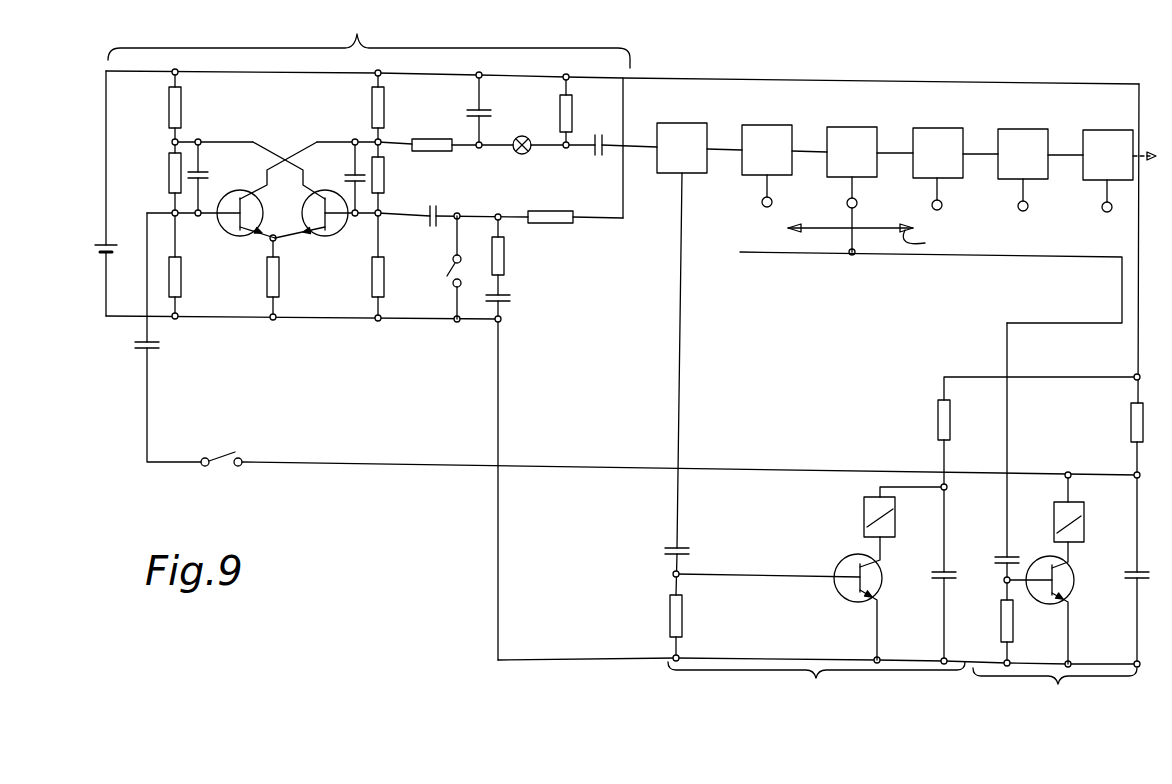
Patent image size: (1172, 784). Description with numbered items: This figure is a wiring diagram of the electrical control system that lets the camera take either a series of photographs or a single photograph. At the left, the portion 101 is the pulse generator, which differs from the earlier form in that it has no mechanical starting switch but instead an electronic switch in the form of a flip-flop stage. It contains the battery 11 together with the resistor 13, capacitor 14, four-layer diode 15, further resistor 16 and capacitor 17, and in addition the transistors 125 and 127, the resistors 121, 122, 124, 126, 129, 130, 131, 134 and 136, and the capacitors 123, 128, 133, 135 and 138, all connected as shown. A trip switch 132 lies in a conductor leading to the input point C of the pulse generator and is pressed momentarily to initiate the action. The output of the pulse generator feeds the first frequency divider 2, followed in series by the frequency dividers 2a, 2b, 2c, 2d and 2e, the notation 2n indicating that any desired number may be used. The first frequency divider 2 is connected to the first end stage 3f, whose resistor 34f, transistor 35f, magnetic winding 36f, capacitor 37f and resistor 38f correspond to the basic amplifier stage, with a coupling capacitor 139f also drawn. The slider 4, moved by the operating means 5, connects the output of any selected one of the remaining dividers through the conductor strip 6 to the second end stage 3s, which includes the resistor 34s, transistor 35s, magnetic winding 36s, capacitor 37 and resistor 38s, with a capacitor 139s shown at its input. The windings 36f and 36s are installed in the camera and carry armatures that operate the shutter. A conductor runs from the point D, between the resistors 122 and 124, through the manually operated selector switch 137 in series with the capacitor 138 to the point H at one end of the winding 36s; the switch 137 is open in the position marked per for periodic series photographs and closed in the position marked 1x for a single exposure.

The pulse generator 101 is at (369, 37).
The battery 11 is at (117, 262).
The resistor 121 is at (181, 111).
The resistor 122 is at (169, 186).
The capacitor 123 is at (210, 178).
The resistor 124 is at (181, 283).
The transistor 125 is at (232, 228).
The resistor 126 is at (267, 290).
The transistor 127 is at (324, 240).
The capacitor 128 is at (343, 180).
The resistor 129 is at (372, 110).
The resistor 130 is at (384, 181).
The resistor 131 is at (366, 284).
The trip switch 132 is at (446, 278).
The capacitor 133 is at (444, 207).
The resistor 134 is at (504, 262).
The capacitor 135 is at (510, 298).
The resistor 136 is at (562, 224).
The selector switch 137 is at (215, 452).
The capacitor 138 is at (162, 346).
The capacitor 139f is at (706, 544).
The capacitor 139s is at (994, 560).
The resistor 13 is at (432, 142).
The capacitor 14 is at (470, 112).
The four-layer diode 15 is at (518, 154).
The resistor 16 is at (559, 110).
The capacitor 17 is at (597, 134).
The first frequency divider 2 is at (699, 148).
The frequency divider 2a is at (784, 166).
The frequency divider 2b is at (870, 189).
The frequency divider 2c is at (955, 169).
The frequency divider 2d is at (1040, 170).
The frequency divider 2e is at (1108, 171).
The further frequency dividers 2n is at (1150, 150).
The slider 4 is at (856, 226).
The operating means 5 is at (925, 243).
The conductor strip 6 is at (1057, 256).
The resistor 34f is at (683, 620).
The transistor 35f is at (848, 595).
The magnetic winding 36f is at (863, 510).
The capacitor 37f is at (931, 574).
The resistor 38f is at (937, 412).
The first end stage 3f is at (816, 688).
The resistor 34s is at (1000, 622).
The transistor 35s is at (1043, 600).
The magnetic winding 36s is at (1078, 536).
The capacitor 37 is at (1124, 574).
The resistor 38s is at (1130, 430).
The second end stage 3s is at (1055, 694).
The point D is at (172, 212).
The input point C is at (460, 222).
The point H is at (1069, 470).
The periodic position legend per is at (269, 446).
The single exposure position legend 1x is at (253, 479).